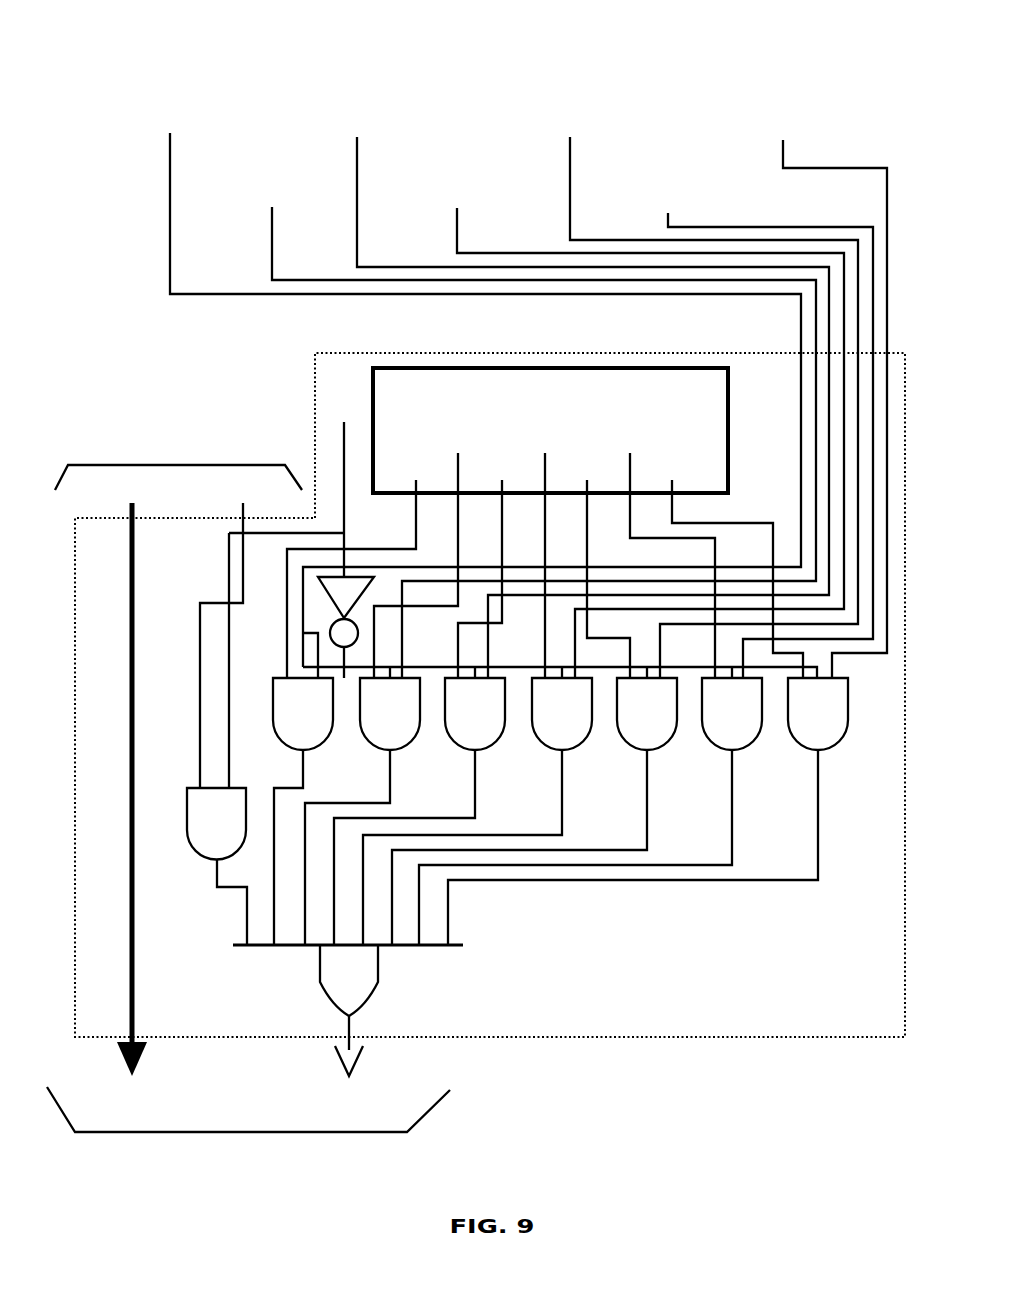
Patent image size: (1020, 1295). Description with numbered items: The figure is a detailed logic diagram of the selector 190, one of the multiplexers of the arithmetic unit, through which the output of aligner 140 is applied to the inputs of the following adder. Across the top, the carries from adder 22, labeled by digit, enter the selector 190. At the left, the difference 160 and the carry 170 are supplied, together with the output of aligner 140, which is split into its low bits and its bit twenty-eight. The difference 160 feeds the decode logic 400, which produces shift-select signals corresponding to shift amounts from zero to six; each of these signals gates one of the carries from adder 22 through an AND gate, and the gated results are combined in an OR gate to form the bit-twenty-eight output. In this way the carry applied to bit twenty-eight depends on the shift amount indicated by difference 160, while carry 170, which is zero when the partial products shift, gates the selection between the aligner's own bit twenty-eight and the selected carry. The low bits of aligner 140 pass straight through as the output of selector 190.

The adder 22 is at (902, 97).
The difference 160 is at (373, 380).
The carry 170 is at (344, 422).
The aligner 140 is at (171, 754).
The decode logic 400 is at (440, 368).
The selector 190 is at (675, 1037).